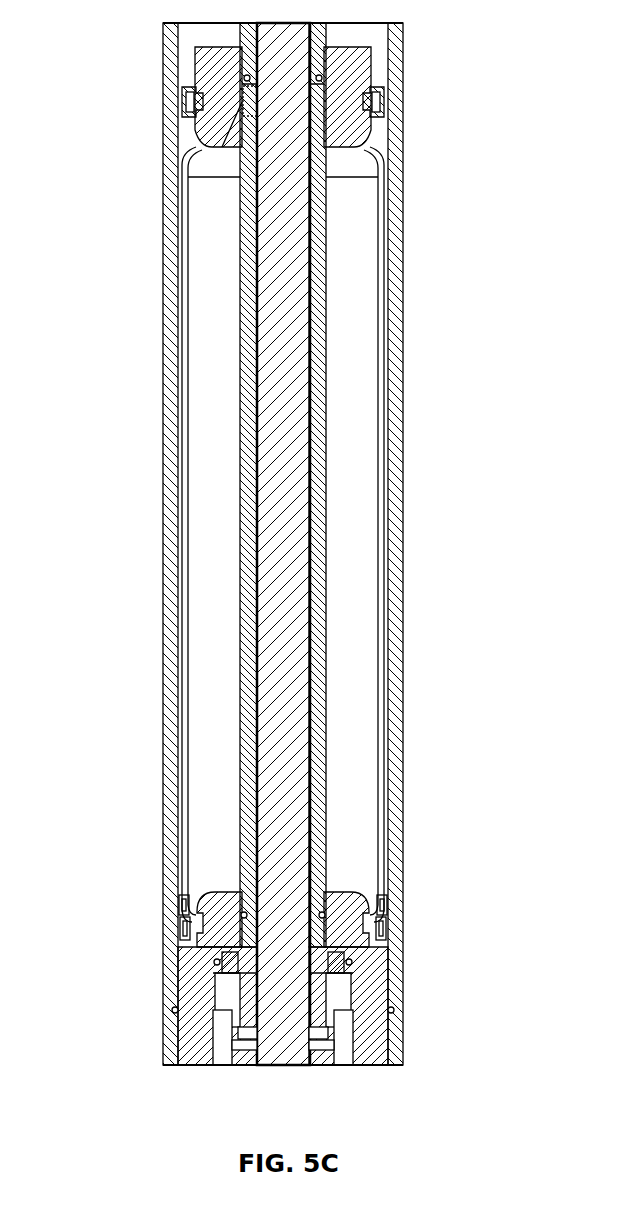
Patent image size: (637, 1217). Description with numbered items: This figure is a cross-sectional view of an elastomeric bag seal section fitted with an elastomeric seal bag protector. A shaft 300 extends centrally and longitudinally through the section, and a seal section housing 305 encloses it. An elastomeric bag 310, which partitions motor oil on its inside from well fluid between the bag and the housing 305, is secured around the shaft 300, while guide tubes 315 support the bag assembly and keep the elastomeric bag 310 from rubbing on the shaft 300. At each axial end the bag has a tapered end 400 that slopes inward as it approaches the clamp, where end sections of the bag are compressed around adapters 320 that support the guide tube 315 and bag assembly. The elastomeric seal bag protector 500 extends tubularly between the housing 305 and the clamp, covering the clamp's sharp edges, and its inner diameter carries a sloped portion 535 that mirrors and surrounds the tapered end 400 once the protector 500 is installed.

The shaft 300 is at (284, 277).
The seal section housing 305 is at (394, 640).
The elastomeric bag 310 is at (215, 268).
The guide tube 315 is at (245, 527).
The adapter 320 is at (380, 95).
The tapered end 400 is at (388, 895).
The elastomeric seal bag protector 500 is at (183, 98).
The sloped portion 535 is at (178, 895).